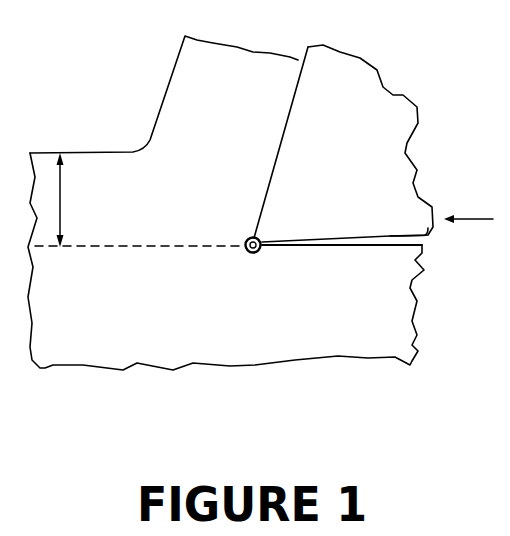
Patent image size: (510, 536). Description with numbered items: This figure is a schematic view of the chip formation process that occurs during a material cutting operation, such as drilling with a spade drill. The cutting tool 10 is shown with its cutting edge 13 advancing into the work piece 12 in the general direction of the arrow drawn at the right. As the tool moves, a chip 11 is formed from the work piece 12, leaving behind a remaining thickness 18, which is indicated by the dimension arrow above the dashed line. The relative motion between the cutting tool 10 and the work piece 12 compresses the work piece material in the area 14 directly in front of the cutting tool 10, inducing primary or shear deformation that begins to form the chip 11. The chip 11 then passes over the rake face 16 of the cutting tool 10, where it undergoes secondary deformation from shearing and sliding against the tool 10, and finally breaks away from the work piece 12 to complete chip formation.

The cutting tool 10 is at (397, 135).
The chip 11 is at (195, 68).
The work piece 12 is at (248, 335).
The cutting edge 13 is at (308, 232).
The area in front of the cutting tool 14 is at (259, 254).
The rake face 16 is at (292, 104).
The thickness 18 is at (139, 200).